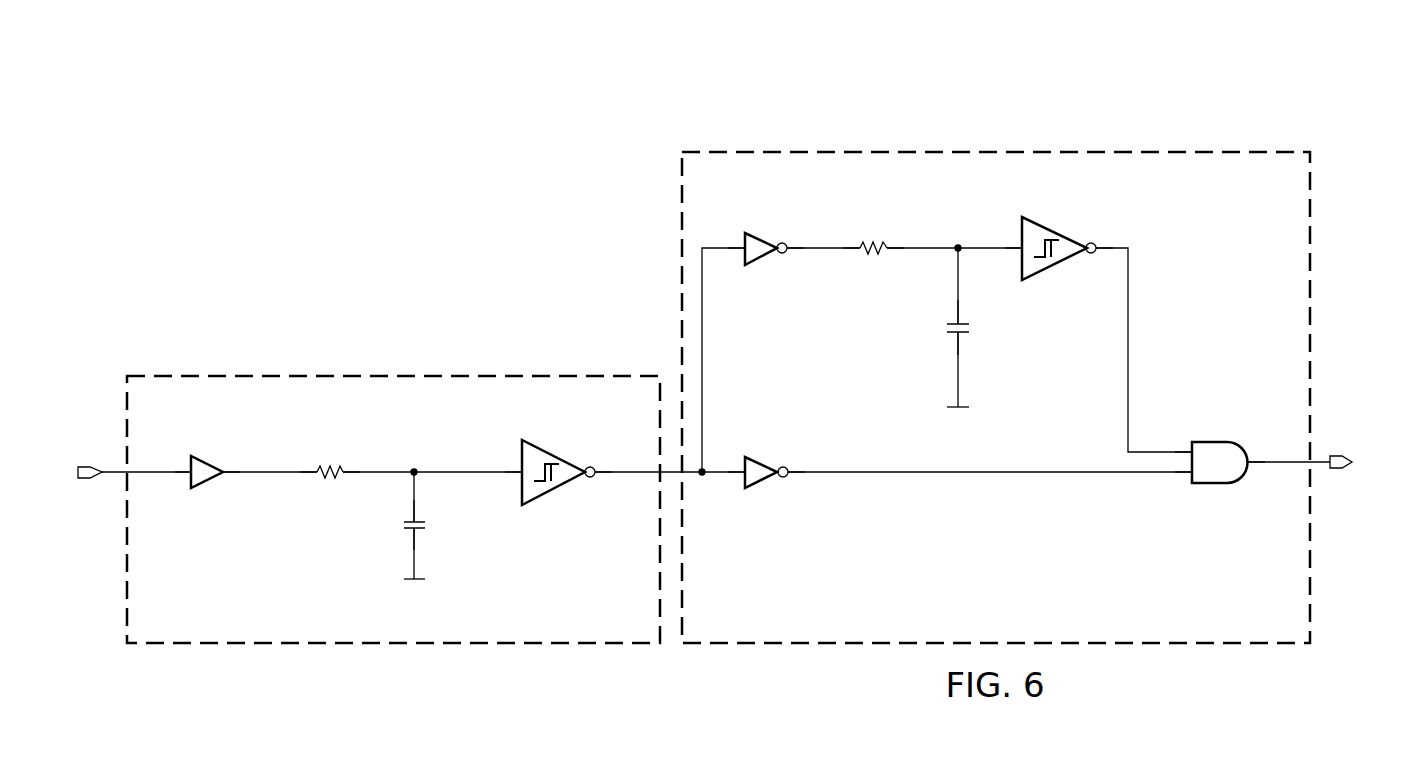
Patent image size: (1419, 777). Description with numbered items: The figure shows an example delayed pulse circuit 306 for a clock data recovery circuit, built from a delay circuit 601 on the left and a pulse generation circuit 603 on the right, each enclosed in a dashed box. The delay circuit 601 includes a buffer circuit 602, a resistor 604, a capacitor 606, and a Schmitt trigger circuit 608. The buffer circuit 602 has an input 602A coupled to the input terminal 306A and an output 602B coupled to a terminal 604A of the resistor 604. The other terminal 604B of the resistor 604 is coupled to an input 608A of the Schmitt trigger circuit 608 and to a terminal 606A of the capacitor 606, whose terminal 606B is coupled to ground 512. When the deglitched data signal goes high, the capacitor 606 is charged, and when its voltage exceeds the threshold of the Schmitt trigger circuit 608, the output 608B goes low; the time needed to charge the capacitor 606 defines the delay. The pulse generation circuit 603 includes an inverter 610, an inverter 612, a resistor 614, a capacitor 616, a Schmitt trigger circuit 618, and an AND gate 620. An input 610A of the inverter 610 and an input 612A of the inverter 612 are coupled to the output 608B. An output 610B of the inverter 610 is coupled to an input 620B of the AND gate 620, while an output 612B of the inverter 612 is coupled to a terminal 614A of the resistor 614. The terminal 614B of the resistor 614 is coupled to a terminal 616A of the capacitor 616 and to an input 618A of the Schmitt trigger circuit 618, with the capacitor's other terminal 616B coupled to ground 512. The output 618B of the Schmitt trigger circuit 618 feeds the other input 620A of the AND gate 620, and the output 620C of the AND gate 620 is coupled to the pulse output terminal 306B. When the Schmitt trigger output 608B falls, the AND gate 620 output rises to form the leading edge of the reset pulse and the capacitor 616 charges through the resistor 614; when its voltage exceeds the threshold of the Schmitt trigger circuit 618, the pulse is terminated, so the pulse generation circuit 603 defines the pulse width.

The delayed pulse circuit 306 is at (430, 101).
The input terminal 306A is at (88, 480).
The pulse output terminal 306B is at (1338, 470).
The delay circuit 601 is at (391, 373).
The buffer circuit 602 is at (208, 461).
The input 602A is at (182, 475).
The output 602B is at (233, 475).
The resistor 604 is at (333, 466).
The terminal 604A is at (305, 470).
The terminal 604B is at (352, 475).
The capacitor 606 is at (428, 527).
The terminal 606A is at (418, 511).
The terminal 606B is at (412, 539).
The Schmitt trigger circuit 608 is at (557, 497).
The input 608A is at (510, 470).
The output 608B is at (605, 468).
The ground 512 is at (410, 585).
The pulse generation circuit 603 is at (1044, 150).
The inverter 610 is at (763, 464).
The input 610A is at (732, 476).
The output 610B is at (798, 476).
The inverter 612 is at (763, 239).
The input 612A is at (736, 246).
The output 612B is at (797, 252).
The resistor 614 is at (876, 242).
The terminal 614A is at (850, 246).
The terminal 614B is at (893, 252).
The capacitor 616 is at (970, 330).
The terminal 616A is at (962, 313).
The terminal 616B is at (955, 344).
The Schmitt trigger circuit 618 is at (1057, 272).
The input 618A is at (1010, 246).
The output 618B is at (1102, 246).
The AND gate 620 is at (1221, 487).
The input 620A is at (1183, 450).
The input 620B is at (1183, 476).
The output 620C is at (1255, 460).